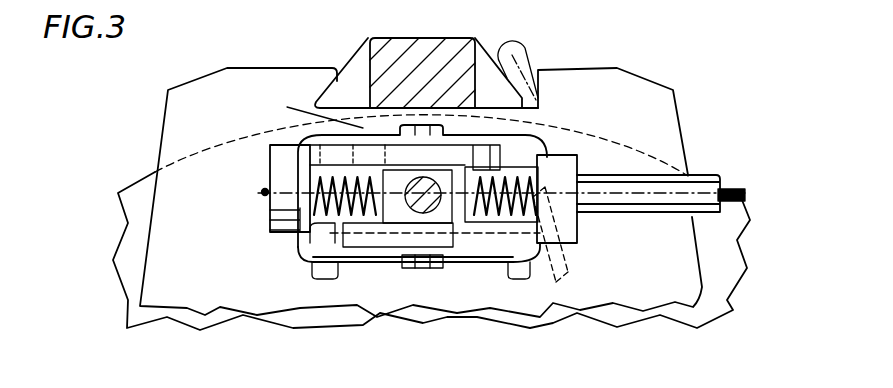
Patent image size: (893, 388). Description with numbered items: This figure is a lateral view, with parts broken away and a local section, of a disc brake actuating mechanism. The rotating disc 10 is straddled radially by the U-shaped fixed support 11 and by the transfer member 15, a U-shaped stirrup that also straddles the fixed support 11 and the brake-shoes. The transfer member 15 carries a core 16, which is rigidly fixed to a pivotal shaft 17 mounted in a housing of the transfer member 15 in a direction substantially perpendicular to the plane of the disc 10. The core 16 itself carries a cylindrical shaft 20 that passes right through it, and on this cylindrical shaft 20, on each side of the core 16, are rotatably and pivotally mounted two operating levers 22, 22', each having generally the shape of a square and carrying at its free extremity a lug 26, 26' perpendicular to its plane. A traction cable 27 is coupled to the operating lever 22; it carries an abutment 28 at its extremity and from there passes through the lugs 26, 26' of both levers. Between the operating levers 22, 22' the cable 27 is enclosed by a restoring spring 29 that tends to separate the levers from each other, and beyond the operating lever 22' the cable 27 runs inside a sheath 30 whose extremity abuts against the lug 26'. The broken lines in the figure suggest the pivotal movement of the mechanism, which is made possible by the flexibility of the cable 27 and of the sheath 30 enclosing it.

The disc 10 is at (128, 180).
The fixed support 11 is at (194, 74).
The transfer member 15 is at (452, 35).
The core 16 is at (428, 268).
The pivotal shaft 17 is at (463, 265).
The cylindrical shaft 20 is at (383, 265).
The operating lever 22 is at (501, 152).
The operating lever 22' is at (585, 234).
The lug 26 is at (260, 171).
The lug 26' is at (547, 166).
The traction cable 27 is at (742, 192).
The abutment 28 is at (262, 192).
The restoring spring 29 is at (305, 240).
The sheath 30 is at (700, 188).